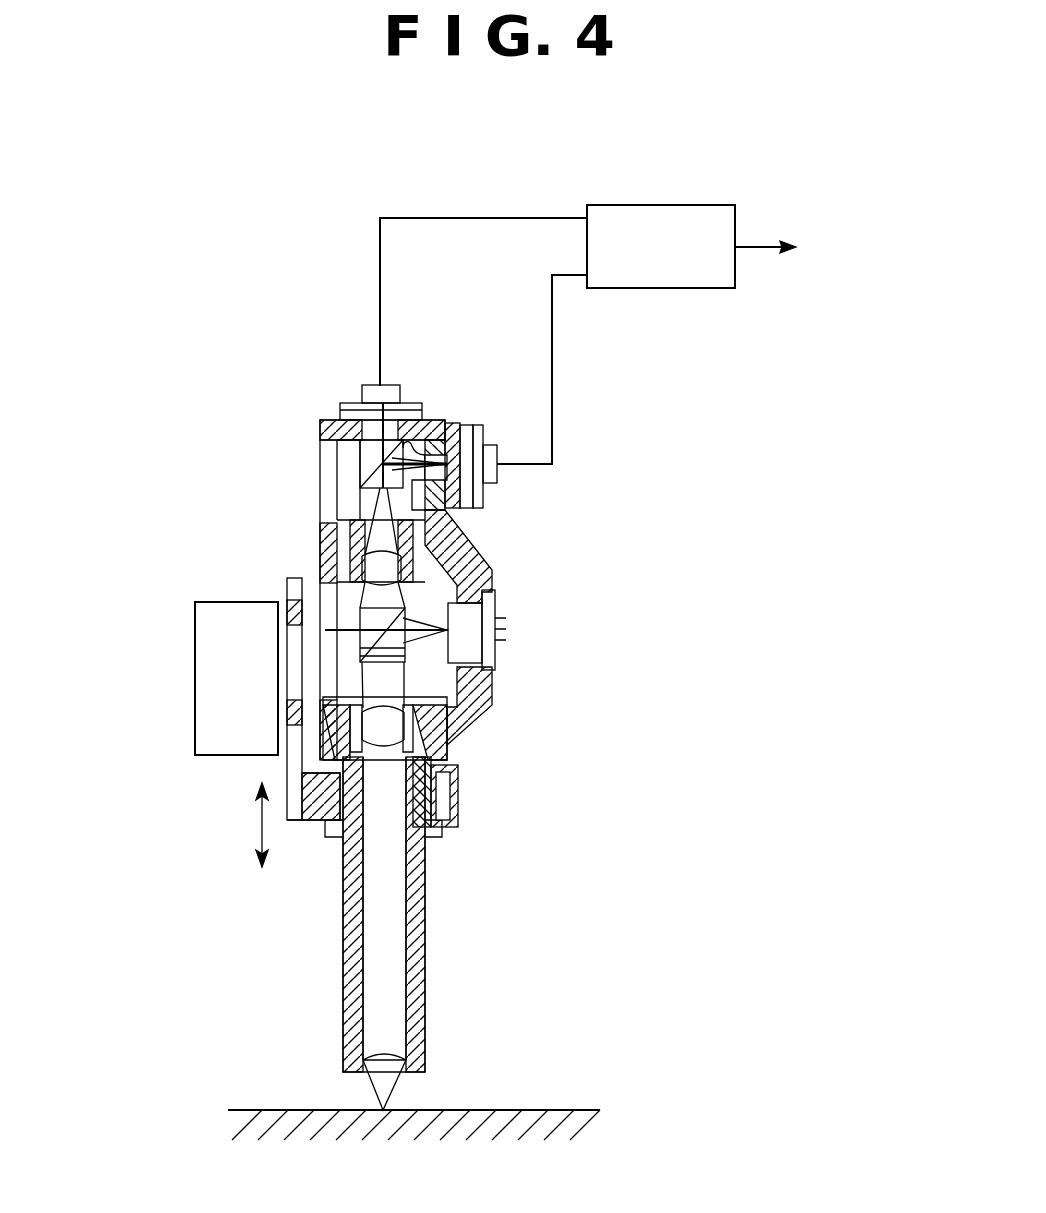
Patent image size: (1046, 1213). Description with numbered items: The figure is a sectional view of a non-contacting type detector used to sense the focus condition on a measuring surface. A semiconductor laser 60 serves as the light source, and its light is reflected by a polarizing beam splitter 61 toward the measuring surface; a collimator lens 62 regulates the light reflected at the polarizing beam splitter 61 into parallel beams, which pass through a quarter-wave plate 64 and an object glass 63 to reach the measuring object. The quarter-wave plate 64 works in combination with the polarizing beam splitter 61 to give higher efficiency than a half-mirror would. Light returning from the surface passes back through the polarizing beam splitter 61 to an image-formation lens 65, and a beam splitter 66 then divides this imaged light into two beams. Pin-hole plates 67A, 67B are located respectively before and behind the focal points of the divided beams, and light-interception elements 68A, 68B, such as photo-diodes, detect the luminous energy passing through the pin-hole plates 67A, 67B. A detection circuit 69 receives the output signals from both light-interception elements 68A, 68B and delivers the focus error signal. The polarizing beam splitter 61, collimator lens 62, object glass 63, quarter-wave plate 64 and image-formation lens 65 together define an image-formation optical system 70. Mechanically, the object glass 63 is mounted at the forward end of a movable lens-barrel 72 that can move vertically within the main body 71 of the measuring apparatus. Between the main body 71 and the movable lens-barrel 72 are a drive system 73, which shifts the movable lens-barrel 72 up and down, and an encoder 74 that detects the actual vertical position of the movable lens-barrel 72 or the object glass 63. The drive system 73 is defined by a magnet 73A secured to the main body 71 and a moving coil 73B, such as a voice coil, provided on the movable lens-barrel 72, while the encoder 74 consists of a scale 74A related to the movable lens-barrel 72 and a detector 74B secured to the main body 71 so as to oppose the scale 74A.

The semiconductor laser 60 is at (495, 600).
The polarizing beam splitter 61 is at (447, 648).
The collimator lens 62 is at (445, 728).
The object glass 63 is at (375, 1058).
The 1/4-wave plate 64 is at (385, 657).
The image-formation lens 65 is at (465, 575).
The beam splitter 66 is at (365, 470).
The pin-hole plate 67A is at (340, 408).
The pin-hole plate 67B is at (472, 508).
The light-interception element 68A is at (388, 385).
The light-interception element 68B is at (490, 445).
The detection circuit 69 is at (672, 205).
The image-formation optical system 70 is at (636, 532).
The main body of the measuring apparatus 71 is at (400, 672).
The movable lens-barrel 72 is at (425, 940).
The drive system 73 is at (620, 825).
The magnet 73A is at (460, 788).
The moving coil 73B is at (460, 813).
The encoder 74 is at (80, 558).
The scale 74A is at (290, 580).
The detector 74B is at (200, 665).